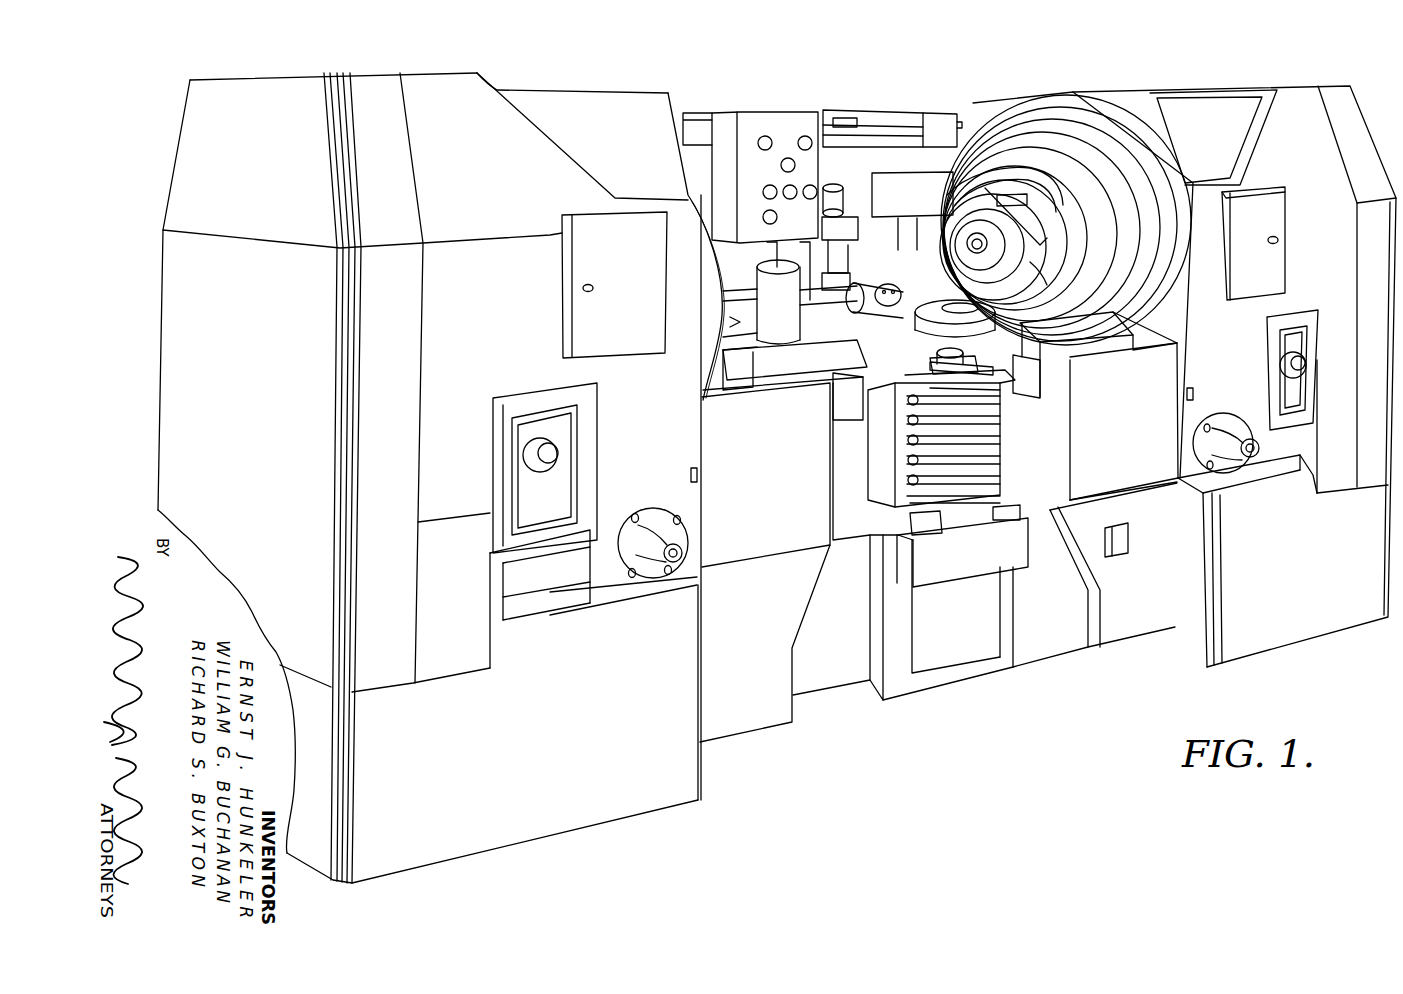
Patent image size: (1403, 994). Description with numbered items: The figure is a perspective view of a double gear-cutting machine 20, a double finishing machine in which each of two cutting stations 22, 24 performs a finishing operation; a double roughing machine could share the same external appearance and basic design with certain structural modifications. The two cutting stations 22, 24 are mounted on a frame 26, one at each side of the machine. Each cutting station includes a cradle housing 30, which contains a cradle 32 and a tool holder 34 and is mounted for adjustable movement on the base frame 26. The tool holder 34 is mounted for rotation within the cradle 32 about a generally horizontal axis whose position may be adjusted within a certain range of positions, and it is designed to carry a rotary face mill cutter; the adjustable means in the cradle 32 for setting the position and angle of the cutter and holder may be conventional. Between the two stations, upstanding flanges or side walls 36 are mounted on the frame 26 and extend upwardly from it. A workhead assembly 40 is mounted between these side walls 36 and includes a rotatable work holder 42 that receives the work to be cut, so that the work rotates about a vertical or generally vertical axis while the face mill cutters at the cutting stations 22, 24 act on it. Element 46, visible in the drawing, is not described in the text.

The double gear-cutting machine 20 is at (867, 737).
The cutting station 22 is at (783, 357).
The cutting station 24 is at (1063, 330).
The frame 26 is at (813, 683).
The cradle housing 30 is at (500, 365).
The cradle 32 is at (727, 268).
The tool holder 34 is at (995, 260).
The side walls 36 is at (775, 478).
The workhead assembly 40 is at (893, 353).
The work holder 42 is at (923, 290).
The slide rail 46 is at (888, 135).